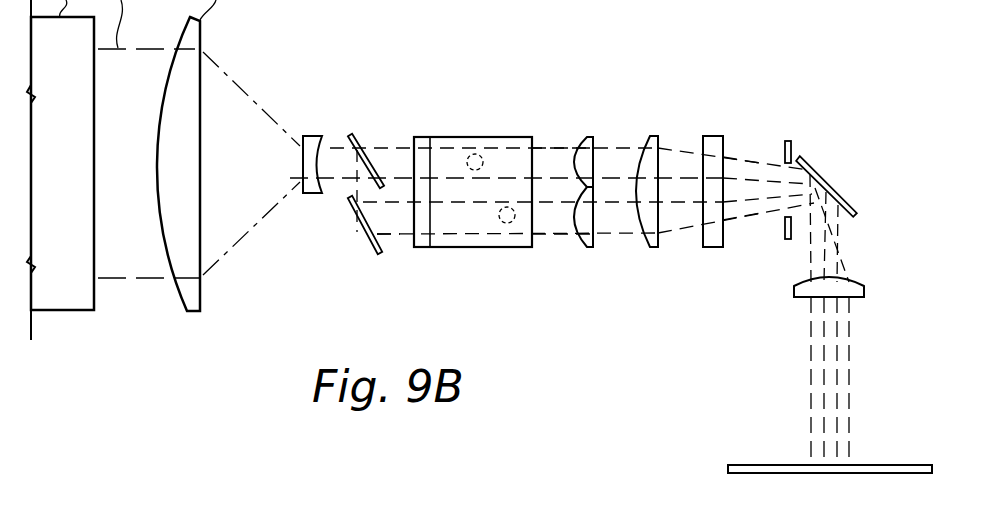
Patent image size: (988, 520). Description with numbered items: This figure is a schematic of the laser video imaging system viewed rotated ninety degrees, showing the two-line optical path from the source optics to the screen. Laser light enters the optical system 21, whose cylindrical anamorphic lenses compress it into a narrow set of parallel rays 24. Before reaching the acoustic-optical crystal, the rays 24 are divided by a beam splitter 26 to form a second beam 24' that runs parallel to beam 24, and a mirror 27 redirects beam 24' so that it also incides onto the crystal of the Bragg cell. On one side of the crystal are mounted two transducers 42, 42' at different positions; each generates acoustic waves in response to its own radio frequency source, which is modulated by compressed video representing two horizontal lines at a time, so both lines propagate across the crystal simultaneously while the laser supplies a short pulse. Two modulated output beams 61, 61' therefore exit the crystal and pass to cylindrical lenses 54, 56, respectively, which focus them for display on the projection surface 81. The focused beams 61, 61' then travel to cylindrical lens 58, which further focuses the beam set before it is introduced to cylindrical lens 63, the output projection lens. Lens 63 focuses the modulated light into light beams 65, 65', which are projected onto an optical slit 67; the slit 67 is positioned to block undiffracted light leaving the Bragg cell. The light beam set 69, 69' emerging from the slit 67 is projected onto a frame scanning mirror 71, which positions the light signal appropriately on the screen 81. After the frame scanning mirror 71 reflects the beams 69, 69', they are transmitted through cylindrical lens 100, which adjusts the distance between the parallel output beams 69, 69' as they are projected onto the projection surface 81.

The optical system 21 is at (240, 175).
The parallel rays 24 is at (348, 127).
The beam 24' is at (381, 267).
The beam splitter 26 is at (352, 136).
The mirror 27 is at (355, 214).
The transducer 42 is at (473, 171).
The transducer 42' is at (483, 254).
The cylindrical lens 54 is at (586, 135).
The cylindrical lens 56 is at (591, 250).
The cylindrical lens 58 is at (650, 135).
The modulated output beam 61 is at (557, 121).
The modulated output beam 61' is at (561, 268).
The cylindrical lens 63 is at (712, 134).
The light beam 65 is at (743, 133).
The light beam 65' is at (741, 251).
The optical slit 67 is at (787, 140).
The light beam 69 is at (855, 281).
The light beam 69' is at (785, 328).
The frame scanning mirror 71 is at (805, 171).
The projection surface 81 is at (752, 465).
The cylindrical lens 100 is at (866, 291).